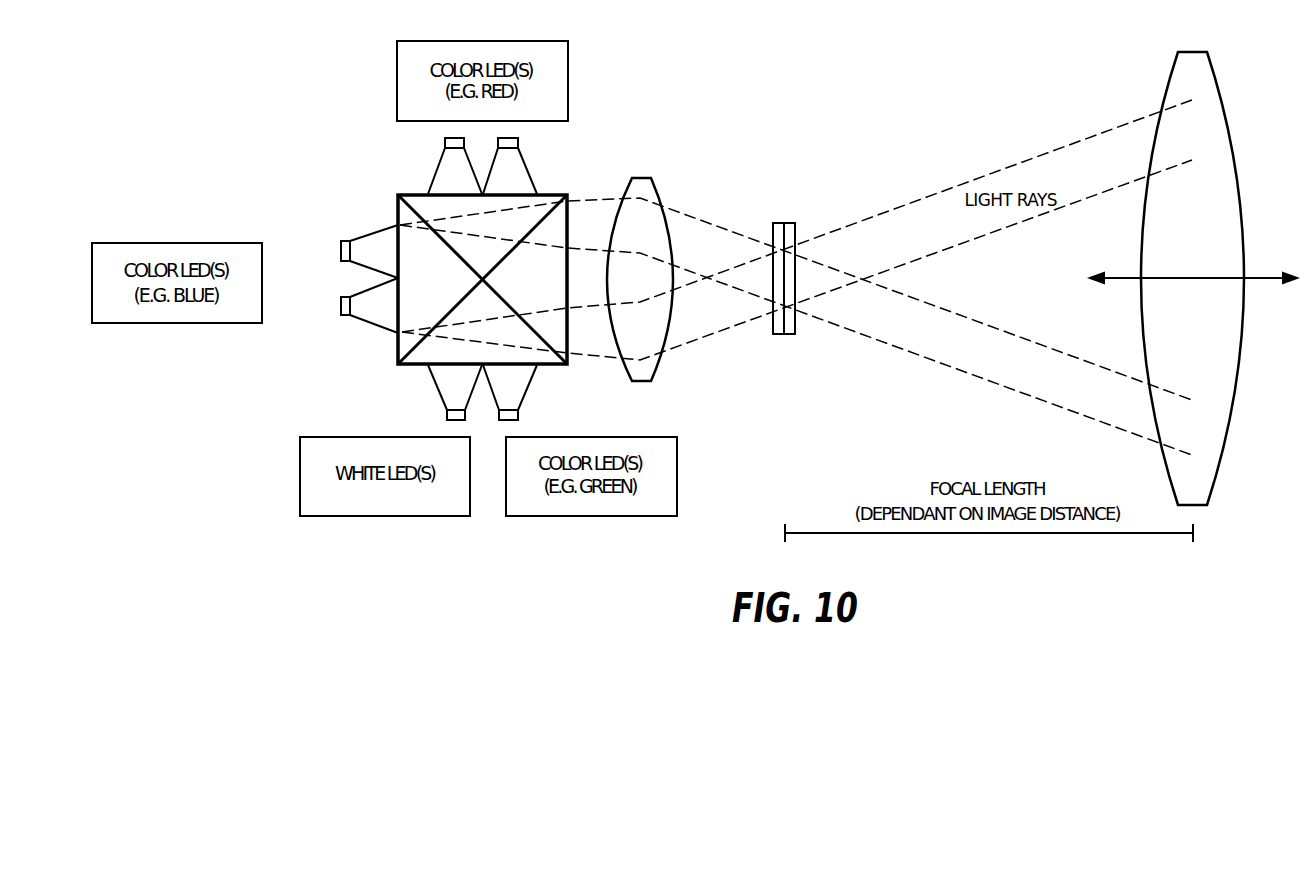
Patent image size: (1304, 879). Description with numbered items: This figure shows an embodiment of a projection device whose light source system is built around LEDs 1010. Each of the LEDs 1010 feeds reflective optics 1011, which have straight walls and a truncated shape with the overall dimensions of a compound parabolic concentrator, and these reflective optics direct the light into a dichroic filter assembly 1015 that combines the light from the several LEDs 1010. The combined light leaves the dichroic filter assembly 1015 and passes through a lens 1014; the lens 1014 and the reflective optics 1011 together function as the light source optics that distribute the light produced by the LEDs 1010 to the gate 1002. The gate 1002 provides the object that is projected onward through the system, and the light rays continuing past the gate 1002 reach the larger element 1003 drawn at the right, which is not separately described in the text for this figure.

The gate 1002 is at (790, 224).
The projection lens 1003 is at (1193, 52).
The LEDs 1010 is at (340, 251).
The reflective optics 1011 is at (378, 232).
The lens 1014 is at (641, 178).
The dichroic filter assembly 1015 is at (415, 194).